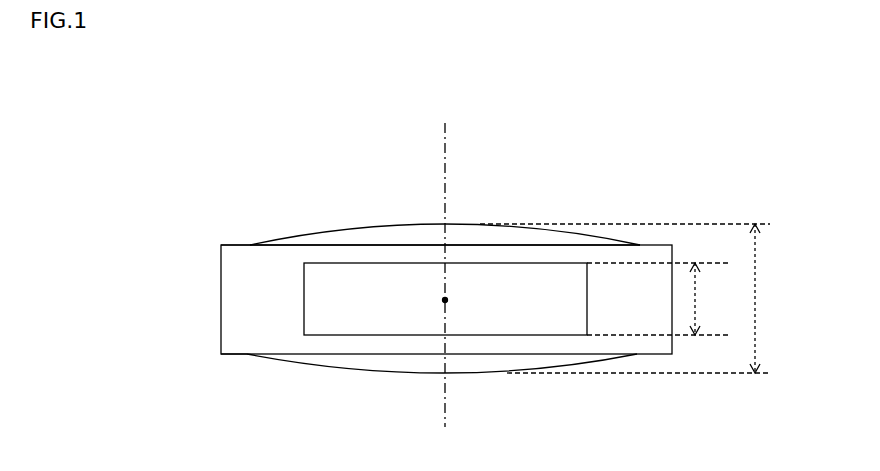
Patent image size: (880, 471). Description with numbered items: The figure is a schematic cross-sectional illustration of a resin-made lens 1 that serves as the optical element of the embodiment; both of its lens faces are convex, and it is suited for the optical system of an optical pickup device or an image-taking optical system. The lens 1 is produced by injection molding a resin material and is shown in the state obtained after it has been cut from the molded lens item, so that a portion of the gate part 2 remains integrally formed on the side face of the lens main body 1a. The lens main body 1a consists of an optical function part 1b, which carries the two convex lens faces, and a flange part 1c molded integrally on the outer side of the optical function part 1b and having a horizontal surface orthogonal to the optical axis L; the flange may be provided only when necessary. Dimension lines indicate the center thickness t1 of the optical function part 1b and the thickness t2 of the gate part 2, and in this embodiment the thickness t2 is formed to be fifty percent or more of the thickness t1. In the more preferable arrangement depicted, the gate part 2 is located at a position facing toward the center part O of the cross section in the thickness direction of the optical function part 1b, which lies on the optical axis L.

The lens 1 is at (173, 226).
The lens main body 1a is at (302, 235).
The optical function part 1b is at (345, 227).
The flange part 1c is at (240, 245).
The gate part 2 is at (304, 308).
The optical axis L is at (447, 160).
The center part O is at (445, 300).
The thickness of the optical function part t1 is at (628, 298).
The thickness of the gate part t2 is at (657, 299).